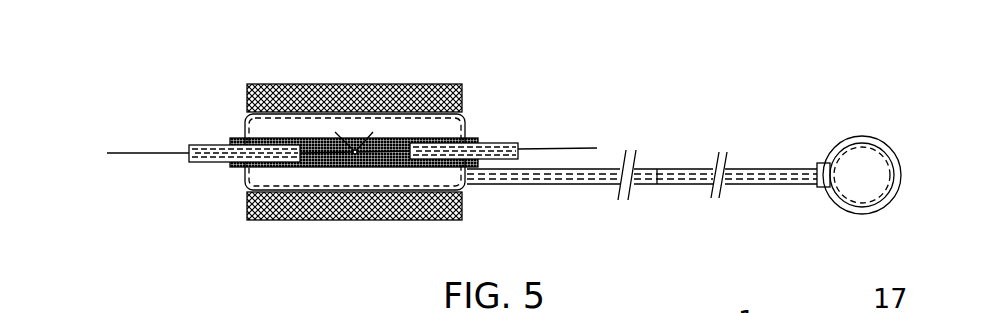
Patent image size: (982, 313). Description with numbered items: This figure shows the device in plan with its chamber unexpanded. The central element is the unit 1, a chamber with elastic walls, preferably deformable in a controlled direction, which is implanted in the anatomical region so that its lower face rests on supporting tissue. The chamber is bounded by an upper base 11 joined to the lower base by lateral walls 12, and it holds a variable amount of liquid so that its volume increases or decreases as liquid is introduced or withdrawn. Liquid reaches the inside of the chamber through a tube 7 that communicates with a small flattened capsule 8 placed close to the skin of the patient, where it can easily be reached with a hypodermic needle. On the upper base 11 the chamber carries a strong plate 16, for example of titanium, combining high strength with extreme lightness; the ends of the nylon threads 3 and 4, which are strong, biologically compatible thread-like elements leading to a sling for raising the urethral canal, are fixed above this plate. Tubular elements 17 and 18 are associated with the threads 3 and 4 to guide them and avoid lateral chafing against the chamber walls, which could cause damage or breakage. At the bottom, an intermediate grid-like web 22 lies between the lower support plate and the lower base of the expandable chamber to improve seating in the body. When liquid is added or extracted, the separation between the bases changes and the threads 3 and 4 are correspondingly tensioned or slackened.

The unit 1 is at (395, 125).
The nylon thread 3 is at (145, 153).
The nylon thread 4 is at (552, 148).
The tube 7 is at (763, 163).
The capsule 8 is at (858, 168).
The upper base 11 is at (273, 117).
The lateral walls 12 is at (243, 175).
The plate 16 is at (322, 138).
The tubular element 17 is at (198, 143).
The tubular element 18 is at (490, 143).
The grid-like web 22 is at (382, 220).